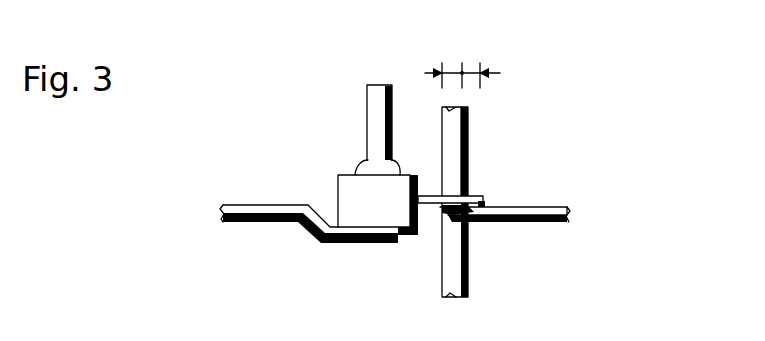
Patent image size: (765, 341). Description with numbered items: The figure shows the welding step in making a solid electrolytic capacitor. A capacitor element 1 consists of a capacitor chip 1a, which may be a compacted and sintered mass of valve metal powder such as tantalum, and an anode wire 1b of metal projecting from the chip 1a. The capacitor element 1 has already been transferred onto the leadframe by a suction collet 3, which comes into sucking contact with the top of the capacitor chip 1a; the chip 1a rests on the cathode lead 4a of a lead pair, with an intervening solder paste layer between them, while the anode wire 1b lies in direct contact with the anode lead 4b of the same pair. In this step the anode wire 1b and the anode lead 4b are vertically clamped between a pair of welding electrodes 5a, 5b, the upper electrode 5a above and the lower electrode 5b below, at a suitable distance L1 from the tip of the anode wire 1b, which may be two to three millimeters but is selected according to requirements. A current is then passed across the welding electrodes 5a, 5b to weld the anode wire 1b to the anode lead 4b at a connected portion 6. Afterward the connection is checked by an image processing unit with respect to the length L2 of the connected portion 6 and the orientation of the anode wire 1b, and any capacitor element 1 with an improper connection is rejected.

The capacitor element 1 is at (350, 172).
The capacitor chip 1a is at (352, 188).
The anode wire 1b is at (474, 197).
The suction collet 3 is at (367, 95).
The cathode lead 4a is at (250, 213).
The anode lead 4b is at (513, 213).
The welding electrode 5a is at (458, 128).
The welding electrode 5b is at (449, 250).
The welded portion 6 is at (466, 222).
The distance from wire tip L1 is at (472, 70).
The length of connected portion L2 is at (452, 72).